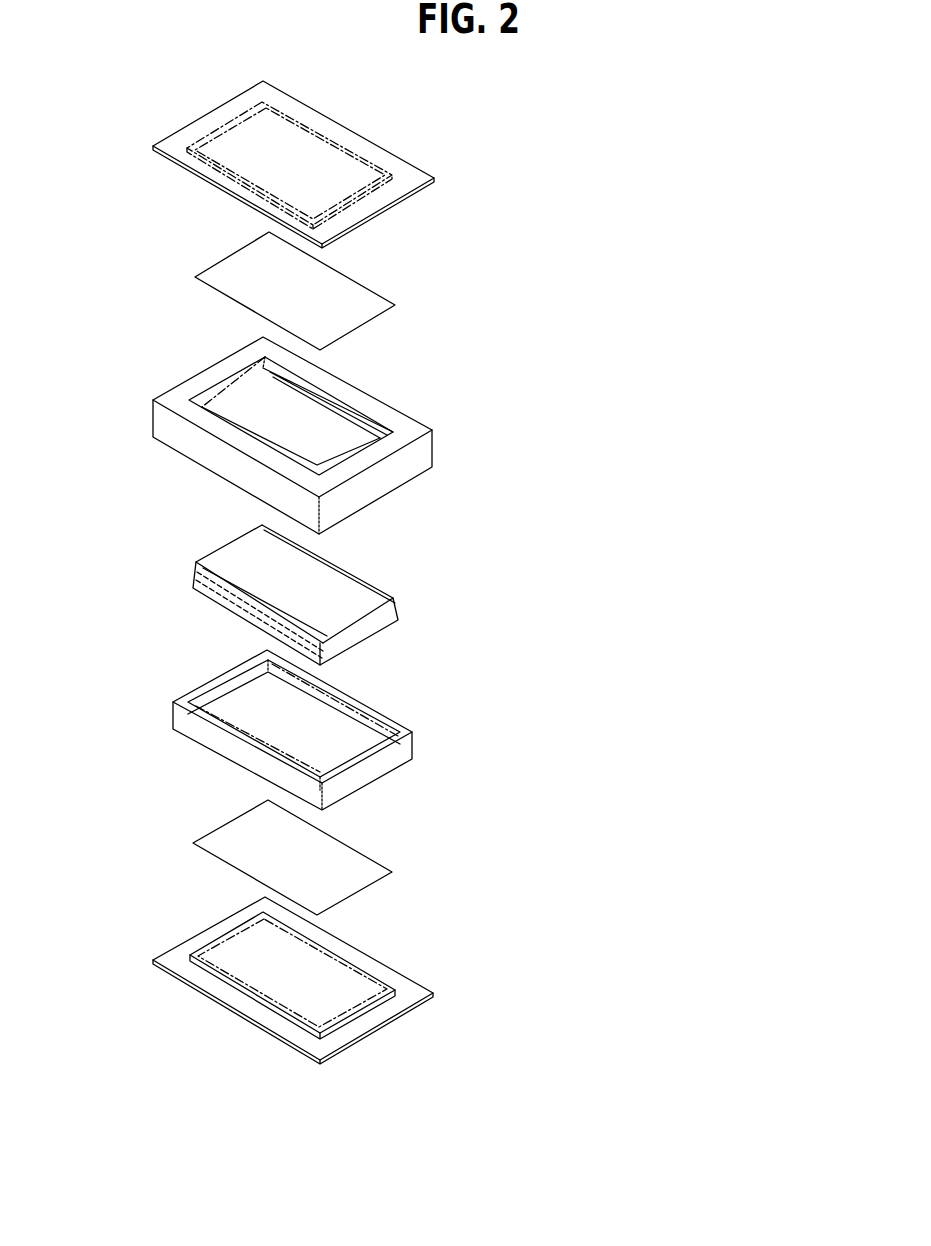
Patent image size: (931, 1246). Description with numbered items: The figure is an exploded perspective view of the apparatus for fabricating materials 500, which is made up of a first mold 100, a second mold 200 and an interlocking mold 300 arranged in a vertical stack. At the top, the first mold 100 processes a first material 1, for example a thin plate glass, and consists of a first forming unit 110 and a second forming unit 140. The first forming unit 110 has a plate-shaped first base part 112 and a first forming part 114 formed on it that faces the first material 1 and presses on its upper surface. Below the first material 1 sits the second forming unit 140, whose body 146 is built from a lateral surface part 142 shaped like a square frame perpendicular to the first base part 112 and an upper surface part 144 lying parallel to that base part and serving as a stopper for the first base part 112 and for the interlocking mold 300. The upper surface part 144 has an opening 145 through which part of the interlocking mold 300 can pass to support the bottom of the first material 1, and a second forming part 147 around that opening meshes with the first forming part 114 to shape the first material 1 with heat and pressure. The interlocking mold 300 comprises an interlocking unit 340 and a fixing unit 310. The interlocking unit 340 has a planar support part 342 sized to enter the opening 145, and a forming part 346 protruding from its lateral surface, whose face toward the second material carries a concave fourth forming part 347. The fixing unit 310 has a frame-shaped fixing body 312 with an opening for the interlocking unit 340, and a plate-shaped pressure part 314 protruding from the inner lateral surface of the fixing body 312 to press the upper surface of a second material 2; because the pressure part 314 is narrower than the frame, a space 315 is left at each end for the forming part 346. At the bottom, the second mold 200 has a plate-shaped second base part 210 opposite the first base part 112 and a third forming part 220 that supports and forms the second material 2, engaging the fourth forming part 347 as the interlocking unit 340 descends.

The apparatus for fabricating materials 500 is at (434, 92).
The first mold 100 is at (545, 230).
The first forming unit 110 is at (489, 212).
The first base part 112 is at (408, 195).
The first forming part 114 is at (370, 203).
The first material 1 is at (200, 267).
The second forming unit 140 is at (423, 417).
The body 146 is at (82, 360).
The upper surface part 144 is at (177, 400).
The lateral surface part 142 is at (177, 433).
The opening 145 is at (266, 400).
The second forming part 147 is at (330, 407).
The interlocking mold 300 is at (550, 555).
The interlocking unit 340 is at (499, 540).
The support part 342 is at (383, 583).
The forming part 346 is at (408, 605).
The fourth forming part 347 is at (322, 657).
The fixing unit 310 is at (421, 730).
The fixing body 312 is at (400, 757).
The pressure part 314 is at (247, 697).
The space 315 is at (359, 726).
The second material 2 is at (193, 838).
The second mold 200 is at (505, 945).
The second base part 210 is at (408, 1005).
The third forming part 220 is at (385, 990).